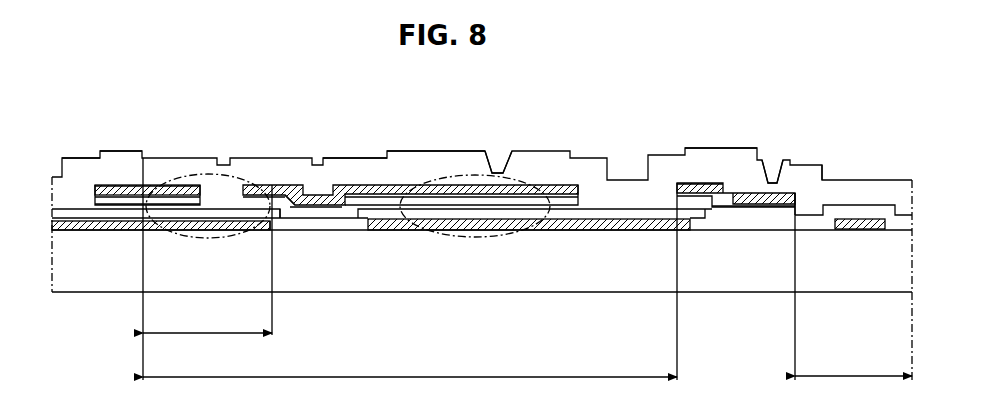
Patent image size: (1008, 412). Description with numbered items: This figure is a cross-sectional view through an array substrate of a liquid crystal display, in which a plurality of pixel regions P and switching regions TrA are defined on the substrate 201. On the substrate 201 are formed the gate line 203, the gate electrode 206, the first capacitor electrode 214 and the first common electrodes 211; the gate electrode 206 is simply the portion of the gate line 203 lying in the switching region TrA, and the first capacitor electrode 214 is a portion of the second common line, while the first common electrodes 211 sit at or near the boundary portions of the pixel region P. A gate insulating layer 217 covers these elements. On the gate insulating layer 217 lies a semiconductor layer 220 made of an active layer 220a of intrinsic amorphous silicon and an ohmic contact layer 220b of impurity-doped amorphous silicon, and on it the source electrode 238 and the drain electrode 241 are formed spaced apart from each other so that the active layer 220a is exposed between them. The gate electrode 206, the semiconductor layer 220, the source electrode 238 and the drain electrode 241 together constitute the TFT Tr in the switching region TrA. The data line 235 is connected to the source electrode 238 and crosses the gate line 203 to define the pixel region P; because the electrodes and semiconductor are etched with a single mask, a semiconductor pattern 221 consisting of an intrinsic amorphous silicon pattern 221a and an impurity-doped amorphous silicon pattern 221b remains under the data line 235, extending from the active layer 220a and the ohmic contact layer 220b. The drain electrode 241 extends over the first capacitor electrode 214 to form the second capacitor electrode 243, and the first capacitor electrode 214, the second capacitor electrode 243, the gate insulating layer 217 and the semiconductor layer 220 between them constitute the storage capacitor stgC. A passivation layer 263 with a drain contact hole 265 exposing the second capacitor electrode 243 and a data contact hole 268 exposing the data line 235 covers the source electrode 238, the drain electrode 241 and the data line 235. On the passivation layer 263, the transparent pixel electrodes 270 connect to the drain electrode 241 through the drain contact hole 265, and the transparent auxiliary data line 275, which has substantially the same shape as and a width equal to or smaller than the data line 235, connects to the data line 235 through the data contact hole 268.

The substrate 201 is at (896, 263).
The gate line 203 is at (72, 232).
The gate electrode 206 is at (217, 232).
The first common electrodes 211 is at (866, 218).
The first capacitor electrode 214 is at (563, 232).
The gate insulating layer 217 is at (353, 232).
The semiconductor layer 220 is at (322, 263).
The active layer 220a is at (284, 207).
The ohmic contact layer 220b is at (292, 198).
The semiconductor pattern 221 is at (158, 116).
The intrinsic amorphous silicon pattern 221a is at (152, 158).
The impurity-doped amorphous silicon pattern 221b is at (132, 158).
The data line 235 is at (77, 158).
The source electrode 238 is at (188, 183).
The drain electrode 241 is at (258, 183).
The second capacitor electrode 243 is at (402, 185).
The passivation layer 263 is at (340, 158).
The drain contact hole 265 is at (500, 150).
The data contact hole 268 is at (773, 158).
The pixel electrodes 270 is at (448, 150).
The auxiliary data line 275 is at (112, 152).
The TFT Tr is at (192, 237).
The switching region TrA is at (207, 269).
The storage capacitor stgC is at (457, 233).
The pixel region P is at (527, 281).